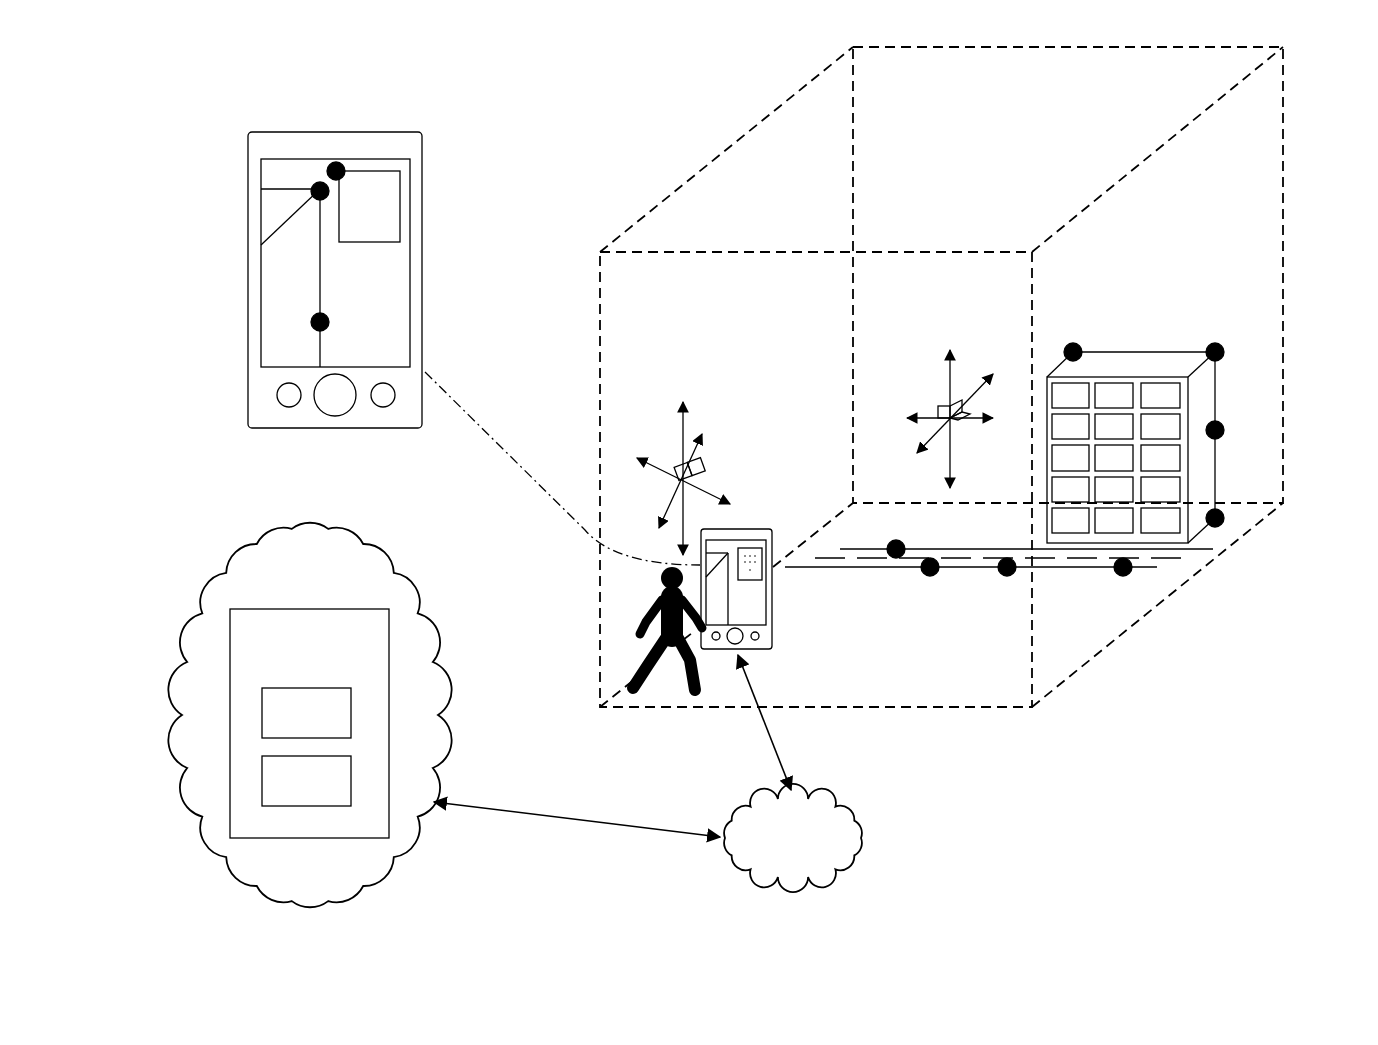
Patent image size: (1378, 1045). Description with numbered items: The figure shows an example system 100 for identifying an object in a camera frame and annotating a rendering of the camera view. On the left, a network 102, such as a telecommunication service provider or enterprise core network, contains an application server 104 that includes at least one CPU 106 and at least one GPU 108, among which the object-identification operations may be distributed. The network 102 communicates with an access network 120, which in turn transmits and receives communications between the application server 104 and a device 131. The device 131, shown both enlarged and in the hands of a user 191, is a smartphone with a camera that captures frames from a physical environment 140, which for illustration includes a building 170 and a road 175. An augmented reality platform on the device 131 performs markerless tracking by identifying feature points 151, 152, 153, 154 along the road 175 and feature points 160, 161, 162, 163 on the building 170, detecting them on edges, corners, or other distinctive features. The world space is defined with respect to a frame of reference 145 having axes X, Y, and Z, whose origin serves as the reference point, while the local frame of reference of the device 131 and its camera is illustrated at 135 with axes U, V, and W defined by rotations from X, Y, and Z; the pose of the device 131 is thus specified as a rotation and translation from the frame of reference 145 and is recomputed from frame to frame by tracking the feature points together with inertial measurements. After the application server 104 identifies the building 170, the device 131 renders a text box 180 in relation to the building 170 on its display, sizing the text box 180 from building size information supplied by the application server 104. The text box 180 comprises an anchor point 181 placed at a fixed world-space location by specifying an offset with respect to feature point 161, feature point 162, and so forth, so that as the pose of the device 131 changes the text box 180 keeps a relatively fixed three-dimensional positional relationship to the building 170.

The system 100 is at (56, 66).
The network 102 is at (294, 598).
The application server 104 is at (294, 674).
The CPU 106 is at (290, 732).
The GPU 108 is at (290, 800).
The access network 120 is at (779, 870).
The device 131 is at (380, 430).
The local frame of reference 135 is at (684, 432).
The physical environment 140 is at (1284, 190).
The frame of reference 145 is at (948, 377).
The feature point 151 is at (1125, 572).
The feature point 152 is at (1010, 572).
The feature point 153 is at (932, 572).
The feature point 154 is at (898, 542).
The feature point 160 is at (1222, 522).
The feature point 161 is at (1222, 433).
The feature point 162 is at (1222, 356).
The feature point 163 is at (1068, 348).
The building 170 is at (1188, 543).
The road 175 is at (1095, 568).
The text box 180 is at (377, 170).
The anchor point 181 is at (334, 163).
The user 191 is at (697, 690).